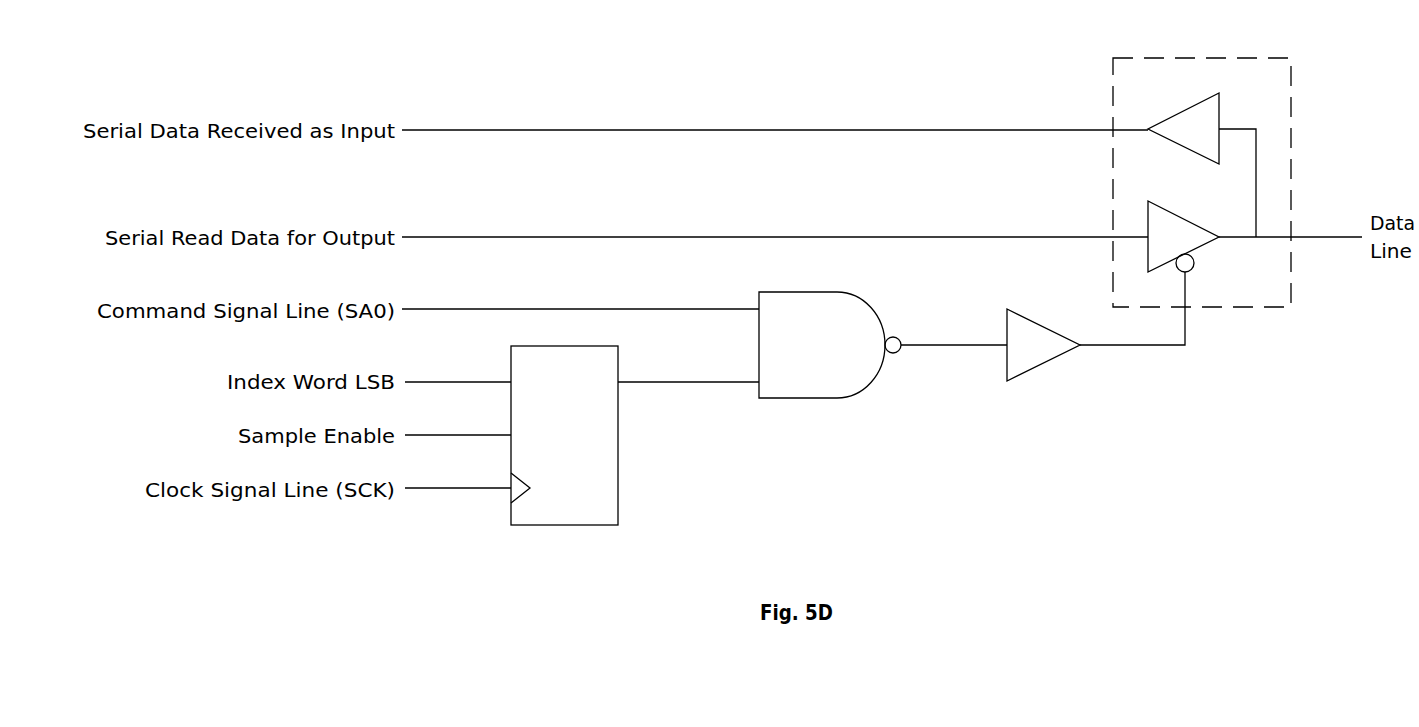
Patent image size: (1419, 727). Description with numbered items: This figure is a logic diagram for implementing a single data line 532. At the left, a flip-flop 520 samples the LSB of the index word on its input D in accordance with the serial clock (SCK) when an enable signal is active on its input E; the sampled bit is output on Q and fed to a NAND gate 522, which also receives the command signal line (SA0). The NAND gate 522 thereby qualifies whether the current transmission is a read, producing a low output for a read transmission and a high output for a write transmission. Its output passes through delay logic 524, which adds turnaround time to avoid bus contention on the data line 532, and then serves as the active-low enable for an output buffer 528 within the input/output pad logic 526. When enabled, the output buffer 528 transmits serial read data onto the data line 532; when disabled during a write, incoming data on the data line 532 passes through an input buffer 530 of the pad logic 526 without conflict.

The flip-flop 520 is at (619, 472).
The NAND gate 522 is at (830, 380).
The delay logic 524 is at (1028, 362).
The input/output pad logic 526 is at (1218, 58).
The output buffer 528 is at (1166, 236).
The input buffer 530 is at (1200, 128).
The single data line 532 is at (1326, 236).